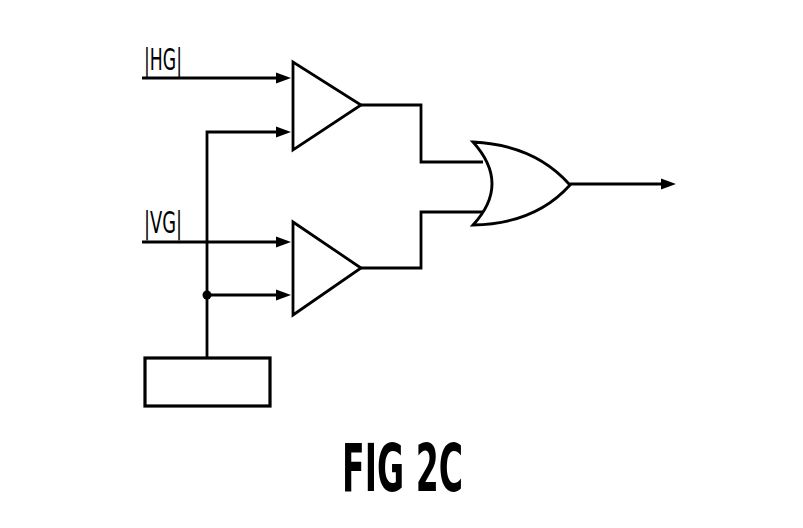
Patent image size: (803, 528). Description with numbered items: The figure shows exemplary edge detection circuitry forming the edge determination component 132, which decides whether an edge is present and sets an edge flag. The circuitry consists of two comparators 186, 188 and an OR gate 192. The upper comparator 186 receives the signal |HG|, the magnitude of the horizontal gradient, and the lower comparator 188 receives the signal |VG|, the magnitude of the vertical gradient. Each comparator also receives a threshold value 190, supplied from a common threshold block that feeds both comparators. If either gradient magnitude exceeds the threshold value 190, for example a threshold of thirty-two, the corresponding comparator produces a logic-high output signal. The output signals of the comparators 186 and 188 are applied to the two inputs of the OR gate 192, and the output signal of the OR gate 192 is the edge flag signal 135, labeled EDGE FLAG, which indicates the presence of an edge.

The comparator 186 is at (331, 83).
The comparator 188 is at (331, 241).
The OR gate 192 is at (513, 142).
The edge flag signal 135 is at (612, 186).
The threshold value 190 is at (145, 379).
The edge determination component 132 is at (567, 340).